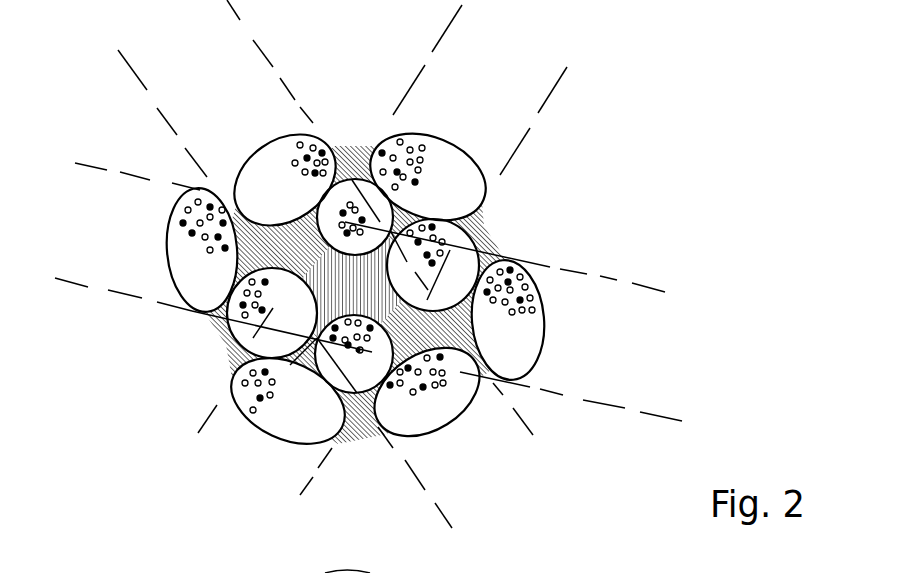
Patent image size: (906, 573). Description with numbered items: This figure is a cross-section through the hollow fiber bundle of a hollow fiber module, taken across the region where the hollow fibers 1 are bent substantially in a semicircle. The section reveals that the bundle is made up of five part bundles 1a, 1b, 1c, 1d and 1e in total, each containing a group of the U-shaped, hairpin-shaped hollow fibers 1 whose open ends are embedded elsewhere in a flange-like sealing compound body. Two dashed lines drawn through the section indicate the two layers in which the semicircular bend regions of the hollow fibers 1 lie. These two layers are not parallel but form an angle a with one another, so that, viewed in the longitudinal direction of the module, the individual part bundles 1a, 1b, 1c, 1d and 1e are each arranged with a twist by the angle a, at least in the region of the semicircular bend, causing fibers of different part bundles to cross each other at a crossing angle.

The hollow fibers 1 is at (248, 397).
The part bundle 1a is at (382, 212).
The part bundle 1b is at (457, 265).
The part bundle 1c is at (445, 162).
The part bundle 1d is at (267, 167).
The part bundle 1e is at (183, 257).
The angle a is at (396, 105).